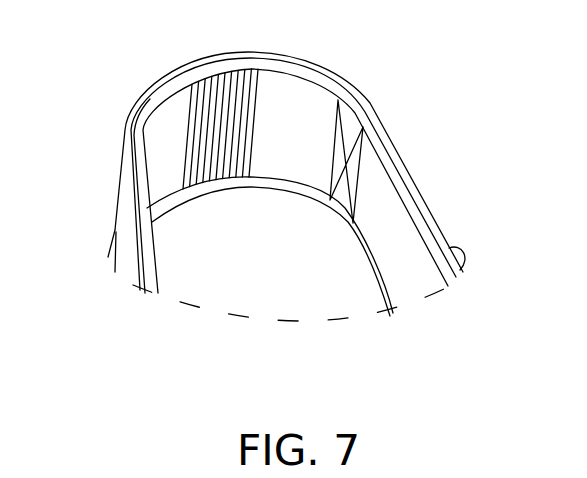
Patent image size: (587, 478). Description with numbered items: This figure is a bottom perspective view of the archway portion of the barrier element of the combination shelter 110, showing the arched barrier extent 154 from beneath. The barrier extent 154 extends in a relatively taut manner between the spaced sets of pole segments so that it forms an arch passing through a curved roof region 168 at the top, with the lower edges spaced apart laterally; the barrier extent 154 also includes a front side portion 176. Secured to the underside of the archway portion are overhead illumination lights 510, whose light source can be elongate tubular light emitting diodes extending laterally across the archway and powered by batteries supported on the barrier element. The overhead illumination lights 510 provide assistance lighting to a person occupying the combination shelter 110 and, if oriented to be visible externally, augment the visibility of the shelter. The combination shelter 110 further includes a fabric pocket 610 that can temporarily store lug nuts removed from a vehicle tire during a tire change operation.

The combination shelter 110 is at (431, 131).
The barrier extent 154 is at (398, 297).
The curved roof region 168 is at (270, 102).
The front side portion 176 is at (215, 247).
The overhead illumination lights 510 is at (192, 130).
The fabric pocket 610 is at (372, 177).